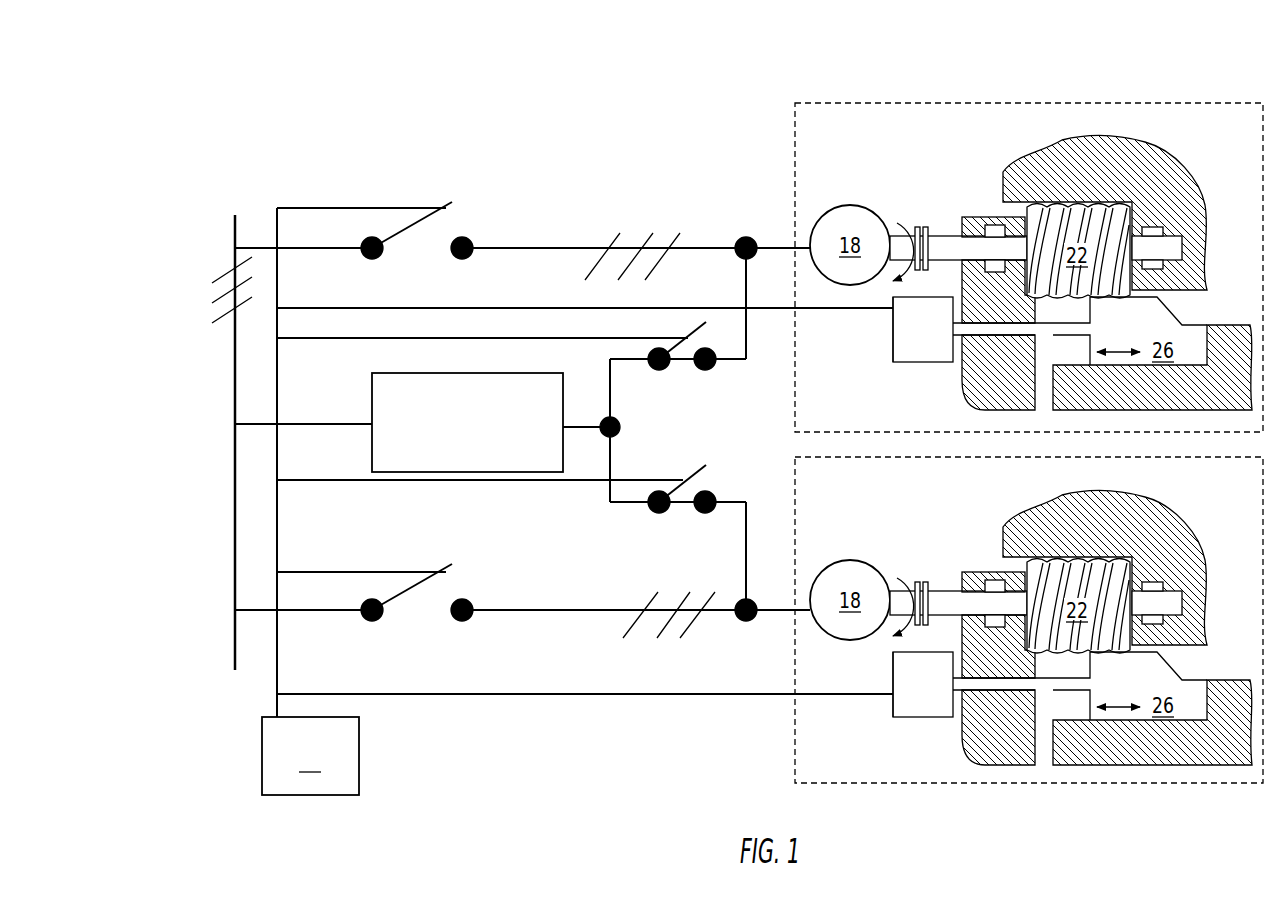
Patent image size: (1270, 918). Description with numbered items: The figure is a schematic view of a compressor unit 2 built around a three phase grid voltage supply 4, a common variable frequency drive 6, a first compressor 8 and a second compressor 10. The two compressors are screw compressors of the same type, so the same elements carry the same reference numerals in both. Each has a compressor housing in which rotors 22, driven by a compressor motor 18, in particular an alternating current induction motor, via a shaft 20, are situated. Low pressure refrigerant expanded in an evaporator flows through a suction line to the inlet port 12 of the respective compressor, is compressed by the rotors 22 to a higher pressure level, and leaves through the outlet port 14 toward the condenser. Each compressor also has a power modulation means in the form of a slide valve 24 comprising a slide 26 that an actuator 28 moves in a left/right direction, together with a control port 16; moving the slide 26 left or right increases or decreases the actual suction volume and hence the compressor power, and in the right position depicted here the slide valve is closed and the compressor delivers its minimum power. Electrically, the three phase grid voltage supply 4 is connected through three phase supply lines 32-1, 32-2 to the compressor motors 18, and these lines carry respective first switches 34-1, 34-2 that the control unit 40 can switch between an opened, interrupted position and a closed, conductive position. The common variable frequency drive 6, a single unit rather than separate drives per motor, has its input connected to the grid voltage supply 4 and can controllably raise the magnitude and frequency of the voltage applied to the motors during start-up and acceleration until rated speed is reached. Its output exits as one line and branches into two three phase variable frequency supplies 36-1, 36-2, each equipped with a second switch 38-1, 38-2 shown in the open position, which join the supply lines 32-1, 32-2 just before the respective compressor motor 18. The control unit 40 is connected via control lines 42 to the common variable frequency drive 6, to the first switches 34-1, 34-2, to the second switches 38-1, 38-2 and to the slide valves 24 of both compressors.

The compressor unit 2 is at (288, 126).
The three phase grid voltage supply 4 is at (229, 218).
The common variable frequency drive 6 is at (372, 390).
The first compressor 8 is at (793, 142).
The second compressor 10 is at (793, 497).
The inlet port 12 is at (998, 419).
The outlet port 14 is at (1118, 400).
The control port 16 is at (1107, 569).
The compressor motor 18 is at (850, 422).
The shaft 20 is at (955, 398).
The rotors 22 is at (1078, 429).
The slide valve 24 is at (862, 533).
The slide 26 is at (1080, 508).
The actuator 28 is at (912, 533).
The three phase supply line 32-1 is at (535, 248).
The three phase supply line 32-2 is at (553, 609).
The first switch 34-1 is at (445, 200).
The first switch 34-2 is at (445, 563).
The three phase variable frequency supply 36-1 is at (611, 375).
The three phase variable frequency supply 36-2 is at (611, 470).
The second switch 38-1 is at (705, 322).
The second switch 38-2 is at (695, 467).
The control unit 40 is at (310, 756).
The control lines 42 is at (295, 693).